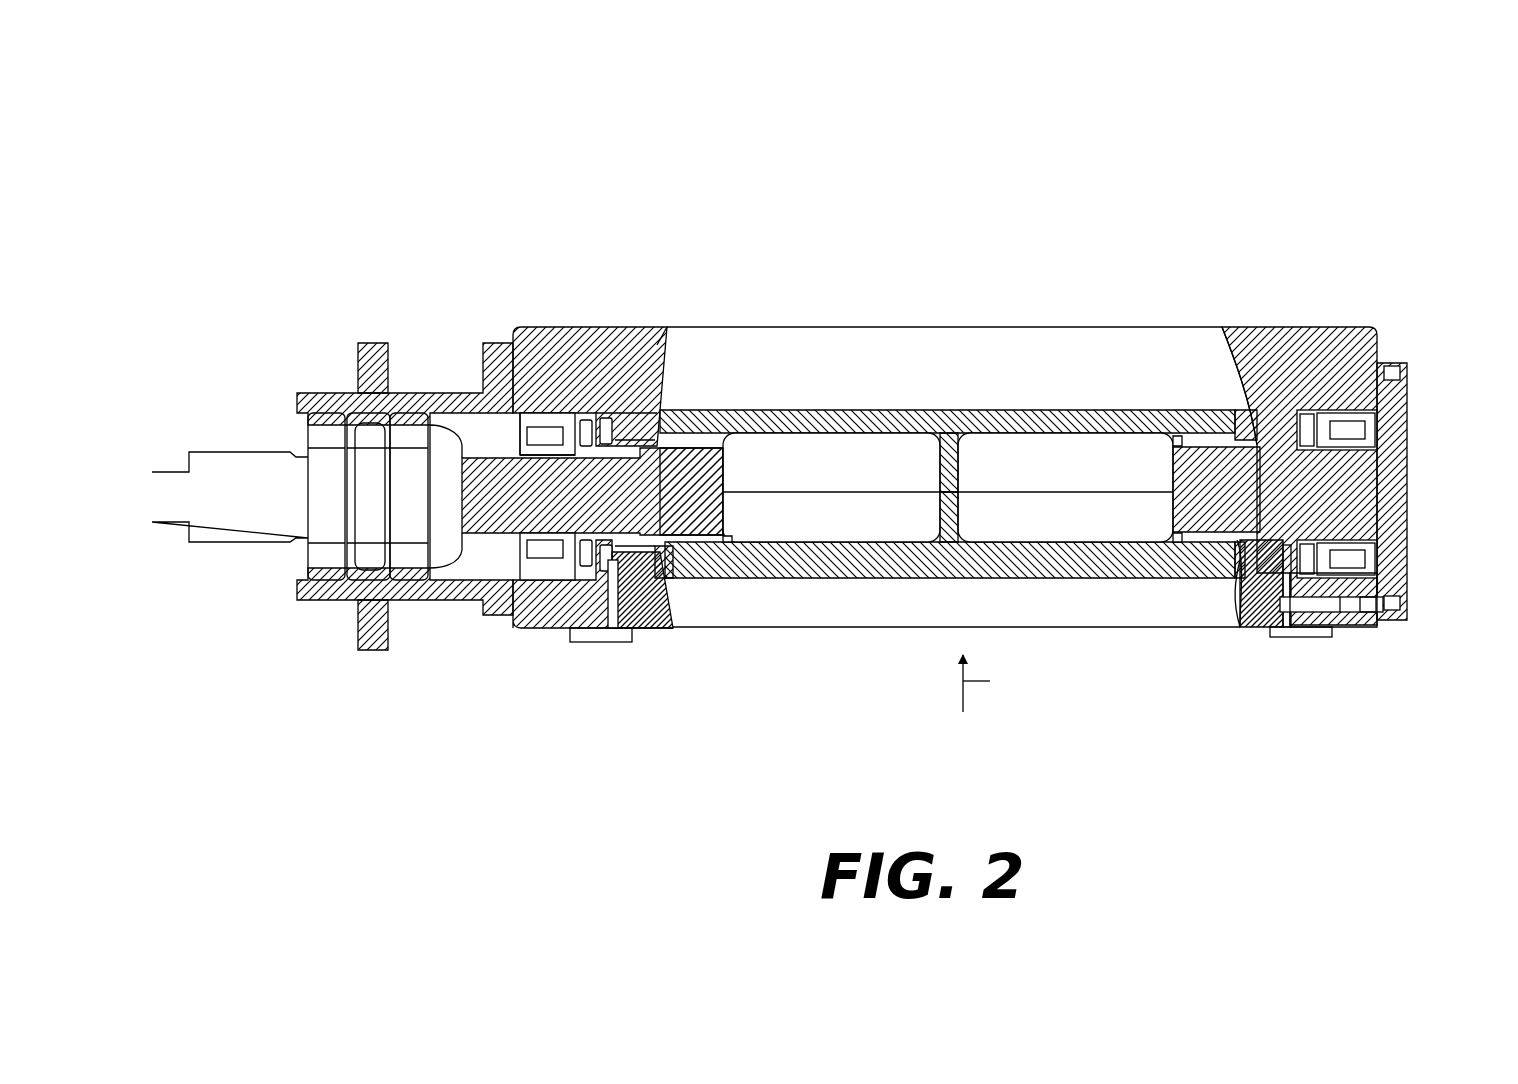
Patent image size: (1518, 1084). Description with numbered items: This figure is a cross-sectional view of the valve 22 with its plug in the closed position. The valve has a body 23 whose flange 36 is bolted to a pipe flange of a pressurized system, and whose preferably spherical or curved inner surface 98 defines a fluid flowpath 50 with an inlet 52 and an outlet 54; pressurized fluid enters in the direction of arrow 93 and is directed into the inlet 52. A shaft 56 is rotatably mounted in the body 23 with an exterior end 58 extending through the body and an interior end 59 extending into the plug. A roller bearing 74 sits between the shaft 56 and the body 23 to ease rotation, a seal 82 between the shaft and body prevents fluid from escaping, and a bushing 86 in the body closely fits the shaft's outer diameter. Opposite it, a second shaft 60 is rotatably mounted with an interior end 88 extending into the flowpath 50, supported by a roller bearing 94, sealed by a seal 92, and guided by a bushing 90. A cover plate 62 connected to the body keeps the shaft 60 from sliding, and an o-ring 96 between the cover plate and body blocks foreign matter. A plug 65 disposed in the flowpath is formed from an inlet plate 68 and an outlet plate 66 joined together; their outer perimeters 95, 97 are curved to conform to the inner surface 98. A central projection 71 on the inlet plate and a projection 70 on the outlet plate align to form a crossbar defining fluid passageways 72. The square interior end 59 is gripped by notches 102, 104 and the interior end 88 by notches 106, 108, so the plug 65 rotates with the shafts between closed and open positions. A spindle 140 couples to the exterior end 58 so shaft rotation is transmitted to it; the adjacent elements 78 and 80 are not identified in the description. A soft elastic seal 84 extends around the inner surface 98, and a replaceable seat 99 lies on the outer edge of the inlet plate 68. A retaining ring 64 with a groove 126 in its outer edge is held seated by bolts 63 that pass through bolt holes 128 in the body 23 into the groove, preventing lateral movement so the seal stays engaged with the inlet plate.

The valve 22 is at (866, 270).
The spindle 140 is at (244, 478).
The bearing 78 is at (318, 428).
The bearing 80 is at (410, 423).
The exterior end 58 is at (456, 575).
The roller bearing 74 is at (548, 440).
The seal 82 is at (588, 440).
The bushing 86 is at (634, 443).
The inner surface 98 is at (662, 372).
The shaft 56 is at (659, 447).
The outlet plate 66 is at (723, 425).
The inlet plate 68 is at (716, 560).
The notch 104 is at (722, 441).
The notch 102 is at (722, 541).
The interior end 59 is at (712, 480).
The fluid passageways 72 is at (850, 483).
The projection 70 is at (950, 478).
The central projection 71 is at (950, 510).
The outlet 54 is at (944, 372).
The inlet 52 is at (813, 620).
The fluid flowpath 50 is at (944, 620).
The plug 65 is at (1102, 404).
The outer perimeter 97 is at (1208, 418).
The bushing 90 is at (1247, 427).
The notch 108 is at (1178, 455).
The notch 106 is at (1173, 533).
The interior end 88 is at (1185, 508).
The body 23 is at (1305, 345).
The seal 92 is at (1362, 378).
The cover plate 62 is at (1392, 368).
The o-ring 96 is at (1380, 405).
The roller bearing 94 is at (1360, 431).
The second shaft 60 is at (1365, 490).
The replaceable seat 99 is at (672, 570).
The outer perimeter 95 is at (1256, 575).
The groove 126 is at (1272, 628).
The bolt holes 128 is at (1320, 612).
The flange 36 is at (1343, 627).
The bolts 63 is at (1366, 608).
The seal 84 is at (612, 575).
The retaining ring 64 is at (645, 612).
The arrow 93 is at (996, 683).